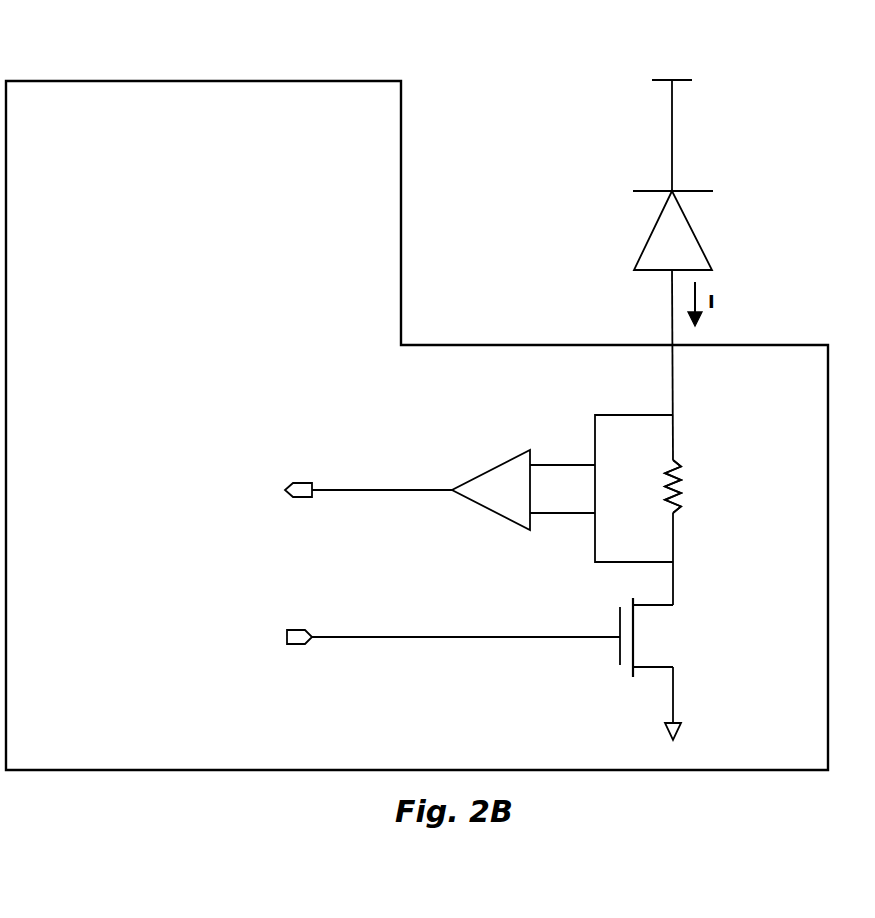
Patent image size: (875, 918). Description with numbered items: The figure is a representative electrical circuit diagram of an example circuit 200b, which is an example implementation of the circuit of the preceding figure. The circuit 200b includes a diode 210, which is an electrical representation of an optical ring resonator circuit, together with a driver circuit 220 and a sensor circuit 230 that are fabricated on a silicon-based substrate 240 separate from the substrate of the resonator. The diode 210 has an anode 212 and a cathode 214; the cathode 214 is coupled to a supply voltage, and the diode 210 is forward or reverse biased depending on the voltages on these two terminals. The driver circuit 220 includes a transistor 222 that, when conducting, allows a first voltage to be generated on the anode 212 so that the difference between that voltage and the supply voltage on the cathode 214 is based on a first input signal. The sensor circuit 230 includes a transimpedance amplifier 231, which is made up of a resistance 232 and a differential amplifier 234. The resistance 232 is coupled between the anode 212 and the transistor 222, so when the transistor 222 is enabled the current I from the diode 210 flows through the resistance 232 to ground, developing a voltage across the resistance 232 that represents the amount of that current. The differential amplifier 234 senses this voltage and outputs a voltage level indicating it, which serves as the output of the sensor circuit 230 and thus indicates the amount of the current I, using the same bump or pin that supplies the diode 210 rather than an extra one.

The circuit 200b is at (791, 83).
The diode 210 is at (657, 258).
The anode 212 is at (672, 270).
The cathode 214 is at (672, 191).
The driver circuit 220 is at (597, 683).
The transistor 222 is at (660, 605).
The sensor circuit 230 is at (700, 412).
The transimpedance amplifier 231 is at (687, 498).
The resistance 232 is at (681, 478).
The differential amplifier 234 is at (488, 500).
The substrate 240 is at (188, 114).